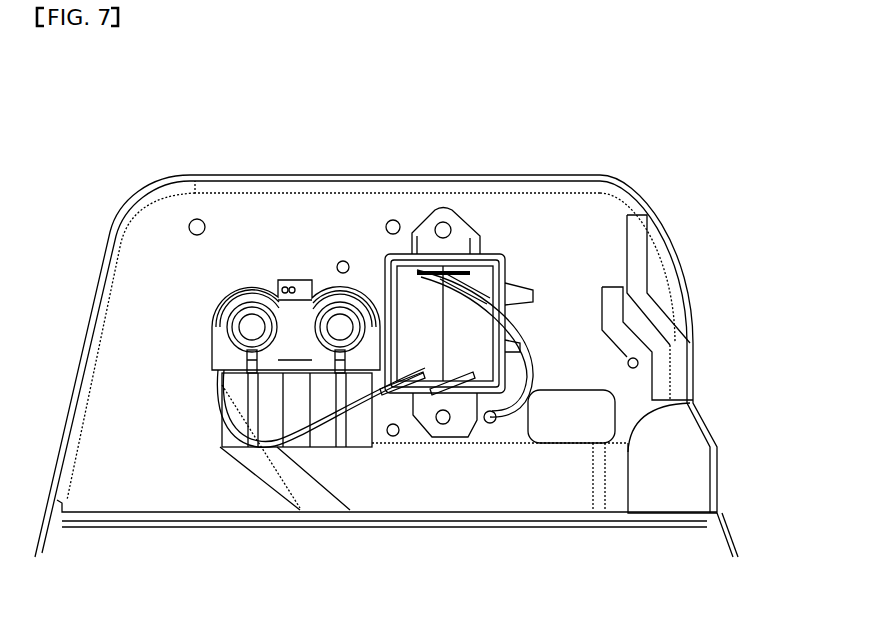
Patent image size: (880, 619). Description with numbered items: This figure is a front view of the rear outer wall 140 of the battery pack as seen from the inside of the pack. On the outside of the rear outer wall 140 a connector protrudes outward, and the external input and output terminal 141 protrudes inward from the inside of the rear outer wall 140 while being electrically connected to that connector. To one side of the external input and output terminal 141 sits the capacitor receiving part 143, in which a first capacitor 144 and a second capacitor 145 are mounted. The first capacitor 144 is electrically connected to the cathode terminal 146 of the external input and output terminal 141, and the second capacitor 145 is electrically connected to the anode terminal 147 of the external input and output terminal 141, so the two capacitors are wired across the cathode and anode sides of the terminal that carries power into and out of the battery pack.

The rear outer wall 140 is at (258, 175).
The external input and output terminal 141 is at (220, 293).
The capacitor receiving part 143 is at (487, 273).
The first capacitor 144 is at (413, 273).
The second capacitor 145 is at (500, 262).
The cathode terminal 146 is at (232, 363).
The anode terminal 147 is at (318, 365).